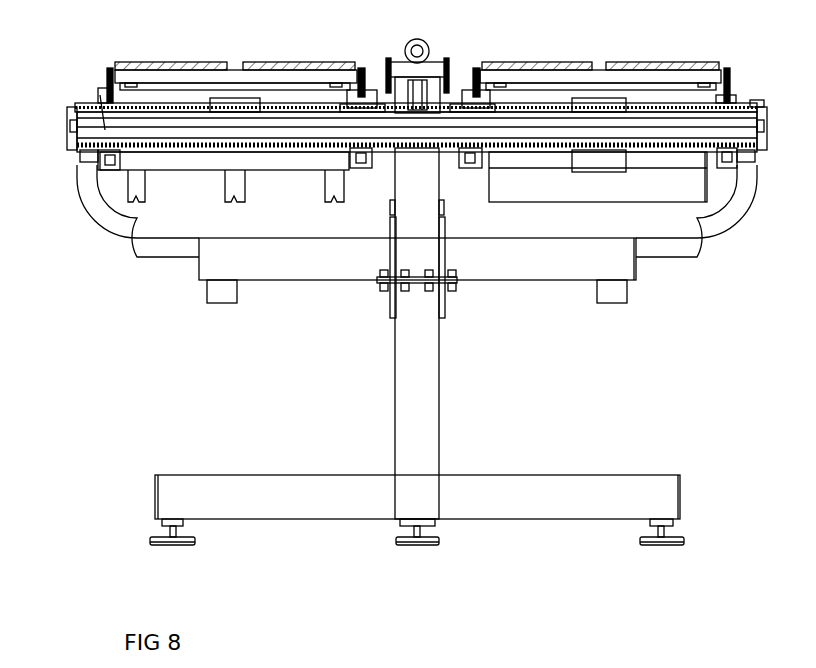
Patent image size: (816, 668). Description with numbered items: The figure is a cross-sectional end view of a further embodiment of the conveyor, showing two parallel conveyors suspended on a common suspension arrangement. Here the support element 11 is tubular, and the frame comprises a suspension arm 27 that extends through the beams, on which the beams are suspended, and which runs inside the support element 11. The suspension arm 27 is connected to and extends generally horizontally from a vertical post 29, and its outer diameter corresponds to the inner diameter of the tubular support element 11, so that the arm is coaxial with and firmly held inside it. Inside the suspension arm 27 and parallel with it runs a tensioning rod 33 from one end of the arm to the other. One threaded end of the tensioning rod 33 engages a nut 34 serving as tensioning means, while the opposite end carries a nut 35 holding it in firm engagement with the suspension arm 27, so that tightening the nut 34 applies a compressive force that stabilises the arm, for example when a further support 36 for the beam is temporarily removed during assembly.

The support element 11 is at (75, 157).
The suspension arm 27 is at (75, 140).
The vertical post 29 is at (417, 353).
The tensioning rod 33 is at (100, 95).
The nut 34 is at (75, 118).
The nut 35 is at (761, 110).
The further support 36 is at (118, 243).